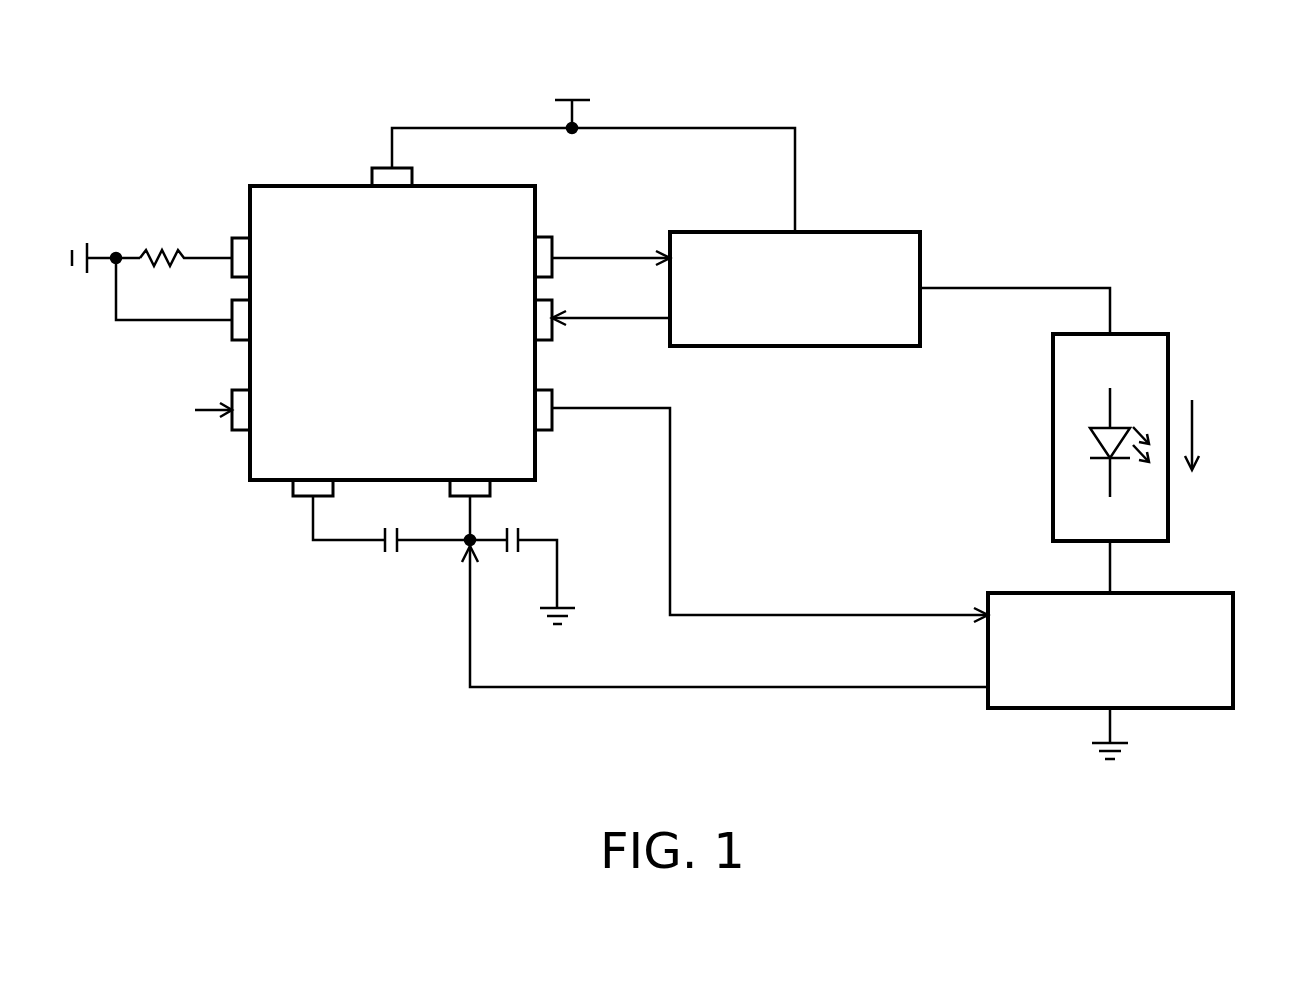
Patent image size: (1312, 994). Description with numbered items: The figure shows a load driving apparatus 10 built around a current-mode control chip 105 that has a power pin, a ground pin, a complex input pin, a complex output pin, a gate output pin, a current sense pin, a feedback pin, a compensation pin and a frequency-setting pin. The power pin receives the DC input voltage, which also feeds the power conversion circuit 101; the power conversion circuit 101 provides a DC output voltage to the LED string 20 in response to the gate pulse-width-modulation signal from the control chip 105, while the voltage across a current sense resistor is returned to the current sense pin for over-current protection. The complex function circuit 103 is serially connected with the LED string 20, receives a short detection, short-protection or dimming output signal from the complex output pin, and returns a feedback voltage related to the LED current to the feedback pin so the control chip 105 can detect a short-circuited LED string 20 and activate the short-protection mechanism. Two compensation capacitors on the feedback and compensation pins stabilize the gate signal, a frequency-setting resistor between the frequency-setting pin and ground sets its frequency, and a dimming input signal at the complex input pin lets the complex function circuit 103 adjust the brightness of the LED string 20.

The load driving apparatus 10 is at (1302, 822).
The control chip 105 is at (475, 186).
The power conversion circuit 101 is at (865, 232).
The LED string 20 is at (1168, 358).
The complex function circuit 103 is at (1233, 617).